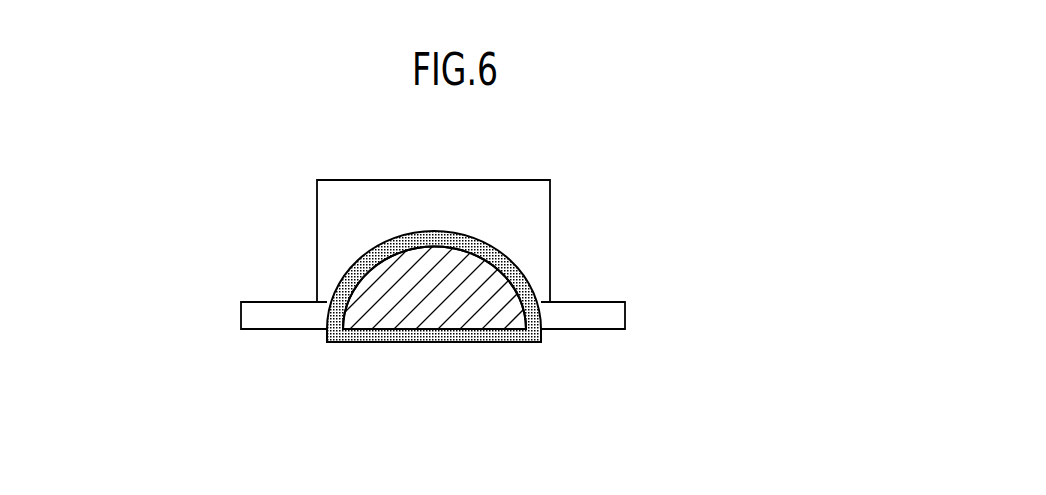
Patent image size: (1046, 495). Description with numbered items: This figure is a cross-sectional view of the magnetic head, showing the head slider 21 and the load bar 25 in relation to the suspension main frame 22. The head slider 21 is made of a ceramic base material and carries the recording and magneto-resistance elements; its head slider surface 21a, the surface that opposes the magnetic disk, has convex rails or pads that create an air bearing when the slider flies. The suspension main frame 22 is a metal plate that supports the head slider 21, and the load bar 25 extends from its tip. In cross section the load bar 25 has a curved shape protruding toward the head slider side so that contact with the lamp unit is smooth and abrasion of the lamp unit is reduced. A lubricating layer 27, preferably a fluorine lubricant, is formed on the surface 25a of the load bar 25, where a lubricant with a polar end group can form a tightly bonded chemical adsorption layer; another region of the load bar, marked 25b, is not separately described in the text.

The head slider 21 is at (270, 214).
The head slider surface 21a is at (476, 180).
The suspension main frame 22 is at (625, 312).
The load bar 25 is at (437, 310).
The surface of the load bar 25a is at (480, 254).
The bottom surface of light emitting element 25b is at (372, 336).
The lubricating layer 27 is at (493, 336).